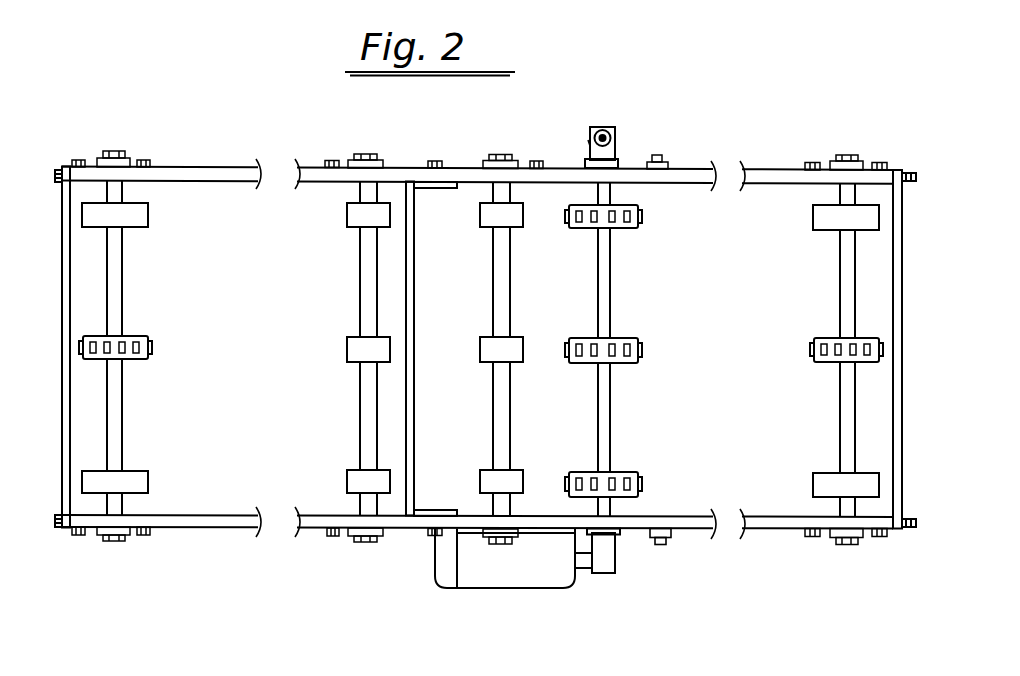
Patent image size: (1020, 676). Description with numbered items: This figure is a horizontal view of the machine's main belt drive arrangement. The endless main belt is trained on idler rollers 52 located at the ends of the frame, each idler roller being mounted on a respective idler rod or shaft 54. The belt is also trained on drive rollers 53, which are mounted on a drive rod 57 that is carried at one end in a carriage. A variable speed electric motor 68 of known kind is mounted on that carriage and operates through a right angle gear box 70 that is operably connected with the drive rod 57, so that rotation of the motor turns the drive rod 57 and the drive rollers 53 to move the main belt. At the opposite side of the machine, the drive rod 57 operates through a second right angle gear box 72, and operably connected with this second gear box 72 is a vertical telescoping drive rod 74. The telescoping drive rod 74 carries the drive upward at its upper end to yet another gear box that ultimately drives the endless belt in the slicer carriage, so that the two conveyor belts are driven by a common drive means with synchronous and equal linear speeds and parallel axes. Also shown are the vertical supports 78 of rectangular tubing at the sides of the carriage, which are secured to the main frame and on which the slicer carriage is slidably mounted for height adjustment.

The idler rollers 52 is at (150, 350).
The drive rollers 53 is at (641, 351).
The idler rods or shafts 54 is at (368, 411).
The drive rod 57 is at (612, 406).
The variable speed electric motor 68 is at (517, 580).
The right angle gear box 70 is at (600, 563).
The second right angle gear box 72 is at (608, 127).
The vertical telescoping drive rod 74 is at (590, 143).
The vertical supports 78 is at (672, 531).